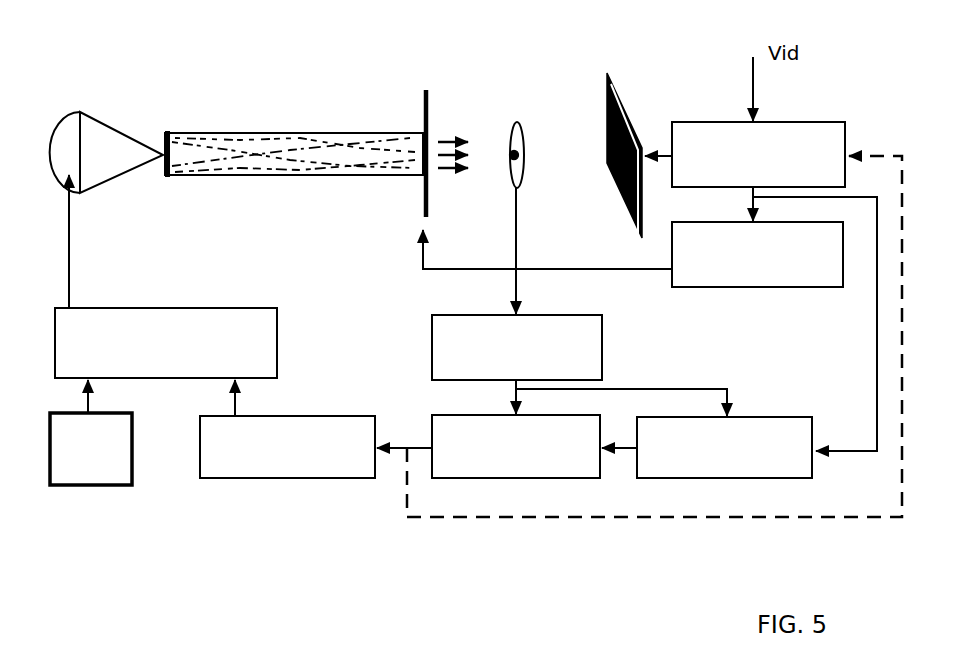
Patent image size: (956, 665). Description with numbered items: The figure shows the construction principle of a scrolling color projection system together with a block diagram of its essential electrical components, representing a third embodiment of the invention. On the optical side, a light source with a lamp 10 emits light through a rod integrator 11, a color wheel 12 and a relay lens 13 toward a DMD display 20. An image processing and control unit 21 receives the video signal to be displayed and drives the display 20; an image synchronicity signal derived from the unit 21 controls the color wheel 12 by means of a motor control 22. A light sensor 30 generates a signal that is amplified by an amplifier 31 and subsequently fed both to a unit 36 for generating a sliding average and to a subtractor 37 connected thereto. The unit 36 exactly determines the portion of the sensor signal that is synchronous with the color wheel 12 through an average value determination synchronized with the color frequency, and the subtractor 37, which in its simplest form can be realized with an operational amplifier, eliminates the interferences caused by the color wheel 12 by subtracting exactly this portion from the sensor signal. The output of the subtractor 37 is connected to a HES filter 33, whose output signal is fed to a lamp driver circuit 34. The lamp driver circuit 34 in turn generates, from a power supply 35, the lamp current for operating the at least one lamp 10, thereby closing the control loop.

The lamp 10 is at (97, 143).
The rod integrator 11 is at (285, 114).
The color wheel 12 is at (425, 74).
The relay lens 13 is at (499, 110).
The DMD display 20 is at (630, 83).
The image processing and control unit 21 is at (758, 154).
The motor control 22 is at (757, 254).
The light sensor 30 is at (531, 150).
The amplifier 31 is at (517, 347).
The HES filter 33 is at (287, 447).
The lamp driver circuit 34 is at (166, 343).
The power supply 35 is at (91, 449).
The unit for generating a sliding average 36 is at (724, 447).
The subtractor 37 is at (516, 446).